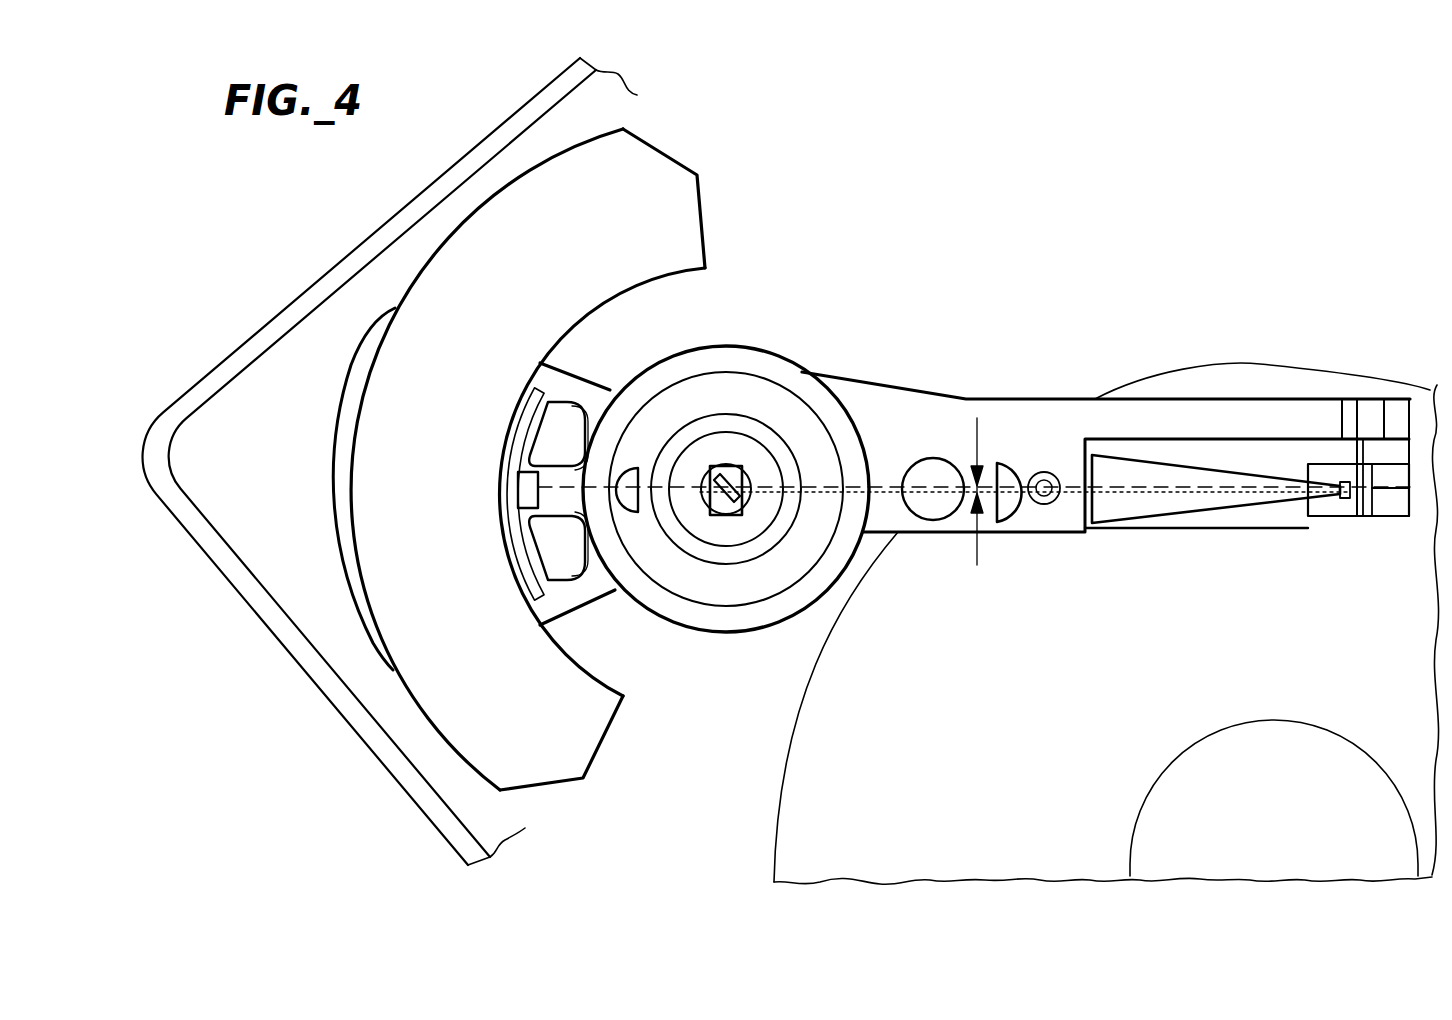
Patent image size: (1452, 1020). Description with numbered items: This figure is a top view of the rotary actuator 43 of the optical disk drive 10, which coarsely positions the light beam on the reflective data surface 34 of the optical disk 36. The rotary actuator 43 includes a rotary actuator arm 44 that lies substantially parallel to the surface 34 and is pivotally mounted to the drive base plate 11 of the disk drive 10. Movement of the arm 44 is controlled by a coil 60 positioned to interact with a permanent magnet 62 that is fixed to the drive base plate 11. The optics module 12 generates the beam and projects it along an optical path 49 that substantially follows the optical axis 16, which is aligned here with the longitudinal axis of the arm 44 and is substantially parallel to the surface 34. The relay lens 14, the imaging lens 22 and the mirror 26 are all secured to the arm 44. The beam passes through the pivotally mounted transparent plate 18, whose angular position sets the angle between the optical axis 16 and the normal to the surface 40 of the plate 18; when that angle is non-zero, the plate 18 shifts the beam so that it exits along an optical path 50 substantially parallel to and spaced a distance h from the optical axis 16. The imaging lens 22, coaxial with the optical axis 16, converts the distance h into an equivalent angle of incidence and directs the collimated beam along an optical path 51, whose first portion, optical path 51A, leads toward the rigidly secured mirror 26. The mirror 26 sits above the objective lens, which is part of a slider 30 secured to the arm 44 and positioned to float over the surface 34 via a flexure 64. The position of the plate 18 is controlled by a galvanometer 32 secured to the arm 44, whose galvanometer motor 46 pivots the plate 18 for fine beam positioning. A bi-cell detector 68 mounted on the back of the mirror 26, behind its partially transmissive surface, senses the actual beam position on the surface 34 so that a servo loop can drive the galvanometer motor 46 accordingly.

The optical disk drive 10 is at (250, 213).
The drive base plate 11 is at (268, 486).
The optics module 12 is at (518, 485).
The relay lens 14 is at (636, 604).
The optical axis 16 is at (692, 487).
The transparent plate 18 is at (750, 482).
The imaging lens 22 is at (1015, 505).
The mirror 26 is at (1363, 475).
The slider 30 is at (1348, 505).
The galvanometer 32 is at (777, 464).
The reflective data surface 34 is at (1070, 722).
The optical disk 36 is at (810, 735).
The surface of the plate 40 is at (727, 515).
The rotary actuator 43 is at (944, 256).
The rotary actuator arm 44 is at (840, 380).
The galvanometer motor 46 is at (702, 497).
The optical path 49 is at (660, 486).
The optical path 50 is at (912, 553).
The optical path 51 is at (1240, 500).
The optical path 51A is at (1150, 500).
The coil 60 is at (347, 420).
The permanent magnet 62 is at (447, 273).
The flexure 64 is at (1150, 503).
The bi-cell detector 68 is at (1395, 468).
The distance h is at (977, 425).